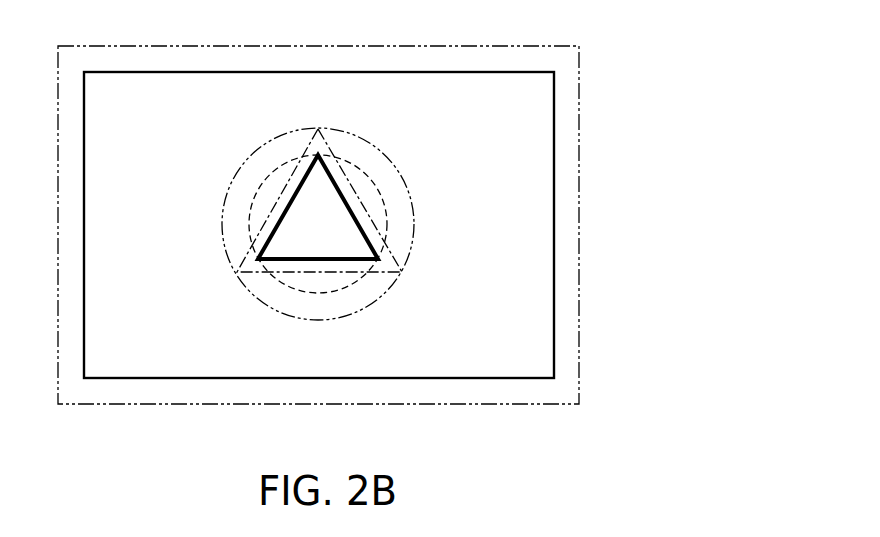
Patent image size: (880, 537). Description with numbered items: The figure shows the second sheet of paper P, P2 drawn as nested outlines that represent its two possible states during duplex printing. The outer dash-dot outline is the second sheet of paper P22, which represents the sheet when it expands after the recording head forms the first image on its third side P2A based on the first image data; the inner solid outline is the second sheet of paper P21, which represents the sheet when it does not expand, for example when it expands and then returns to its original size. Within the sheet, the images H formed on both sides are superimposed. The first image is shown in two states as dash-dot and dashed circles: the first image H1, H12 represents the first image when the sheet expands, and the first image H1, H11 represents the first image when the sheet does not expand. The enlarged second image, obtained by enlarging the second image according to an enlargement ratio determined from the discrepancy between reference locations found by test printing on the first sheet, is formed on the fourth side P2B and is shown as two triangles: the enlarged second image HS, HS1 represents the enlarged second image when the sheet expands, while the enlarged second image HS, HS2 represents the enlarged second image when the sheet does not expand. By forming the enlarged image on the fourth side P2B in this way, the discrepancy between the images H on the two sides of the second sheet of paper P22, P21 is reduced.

The projection pattern (second pattern) P, P2 is at (398, 221).
The second sheet of paper when expanded P22 is at (579, 107).
The second sheet of paper when not expanded P21 is at (554, 183).
The fourth side P2B is at (542, 299).
The third side P2A is at (554, 351).
The image H is at (378, 201).
The outer circular hole boundary H1, H12 is at (378, 151).
The inner circular hole boundary H1, H11 is at (373, 183).
The triangular hole shape (inner) HS, HS2 is at (358, 222).
The triangular hole shape (outer) HS, HS1 is at (385, 252).